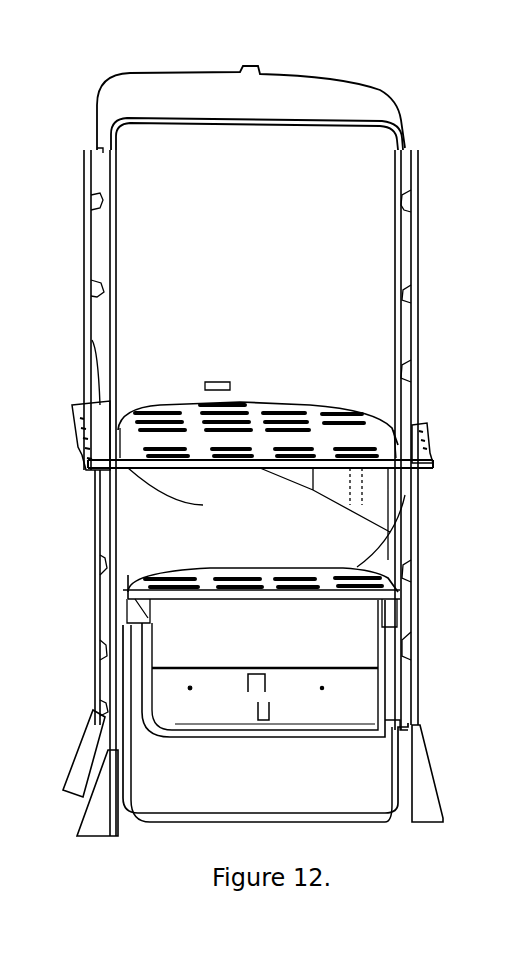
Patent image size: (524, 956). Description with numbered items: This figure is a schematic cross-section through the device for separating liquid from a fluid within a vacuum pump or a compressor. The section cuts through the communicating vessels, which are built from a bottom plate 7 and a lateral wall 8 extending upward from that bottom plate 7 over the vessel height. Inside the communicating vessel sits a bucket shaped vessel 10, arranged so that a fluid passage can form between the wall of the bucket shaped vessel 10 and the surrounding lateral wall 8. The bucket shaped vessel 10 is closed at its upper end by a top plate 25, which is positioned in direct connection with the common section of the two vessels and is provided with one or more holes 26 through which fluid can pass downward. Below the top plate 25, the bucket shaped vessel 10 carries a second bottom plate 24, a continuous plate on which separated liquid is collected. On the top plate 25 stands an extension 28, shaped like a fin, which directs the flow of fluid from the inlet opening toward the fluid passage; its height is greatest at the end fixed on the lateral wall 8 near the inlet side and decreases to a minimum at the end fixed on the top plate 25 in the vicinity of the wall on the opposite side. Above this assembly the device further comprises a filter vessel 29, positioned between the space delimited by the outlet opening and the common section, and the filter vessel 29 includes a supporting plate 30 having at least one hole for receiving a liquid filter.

The filter vessel 29 is at (160, 250).
The extension 28 is at (113, 415).
The lateral wall 8 is at (97, 577).
The second bottom plate 24 is at (207, 708).
The bottom plate 7 is at (190, 803).
The supporting plate 30 is at (412, 378).
The top plate 25 is at (415, 462).
The holes 26 is at (405, 548).
The bucket shaped vessel 10 is at (410, 620).